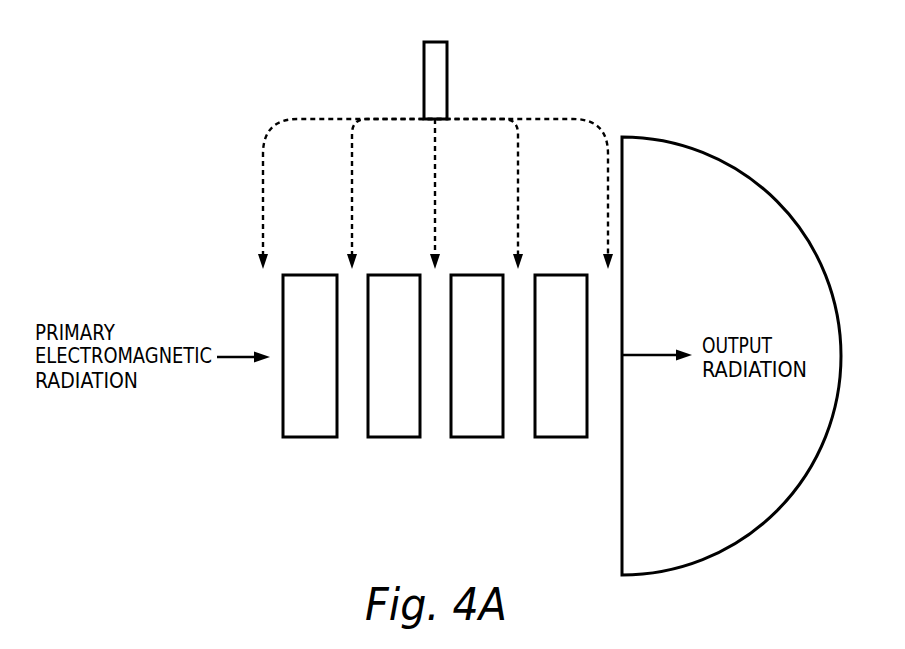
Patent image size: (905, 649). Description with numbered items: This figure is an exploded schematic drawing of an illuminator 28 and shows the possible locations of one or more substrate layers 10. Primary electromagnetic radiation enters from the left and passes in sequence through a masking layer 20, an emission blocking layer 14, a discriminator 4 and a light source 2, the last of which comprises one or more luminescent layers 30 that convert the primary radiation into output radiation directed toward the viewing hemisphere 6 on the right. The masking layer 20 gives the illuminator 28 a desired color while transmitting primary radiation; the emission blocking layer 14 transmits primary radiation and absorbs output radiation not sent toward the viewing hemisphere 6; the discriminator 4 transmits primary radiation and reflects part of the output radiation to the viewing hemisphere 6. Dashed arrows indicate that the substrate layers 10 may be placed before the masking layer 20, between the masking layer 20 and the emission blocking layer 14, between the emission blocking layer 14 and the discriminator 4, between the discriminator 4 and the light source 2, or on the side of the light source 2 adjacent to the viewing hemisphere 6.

The substrate layer 10 is at (447, 78).
The masking layer 20 is at (318, 292).
The emission blocking layer 14 is at (402, 292).
The discriminator 4 is at (483, 304).
The light source 2 is at (562, 278).
The luminescent layer 30 is at (565, 313).
The illuminator 28 is at (441, 347).
The viewing hemisphere 6 is at (750, 533).